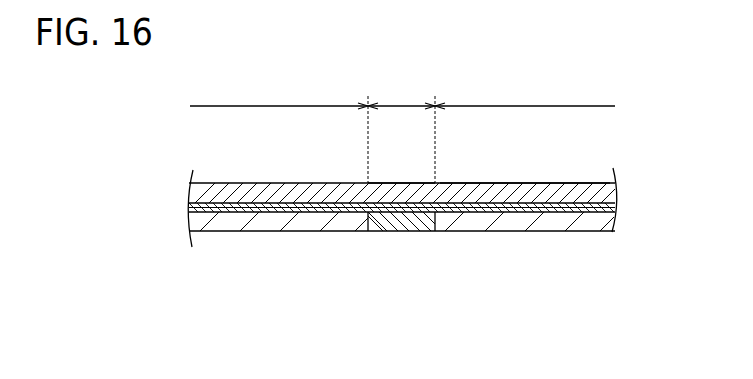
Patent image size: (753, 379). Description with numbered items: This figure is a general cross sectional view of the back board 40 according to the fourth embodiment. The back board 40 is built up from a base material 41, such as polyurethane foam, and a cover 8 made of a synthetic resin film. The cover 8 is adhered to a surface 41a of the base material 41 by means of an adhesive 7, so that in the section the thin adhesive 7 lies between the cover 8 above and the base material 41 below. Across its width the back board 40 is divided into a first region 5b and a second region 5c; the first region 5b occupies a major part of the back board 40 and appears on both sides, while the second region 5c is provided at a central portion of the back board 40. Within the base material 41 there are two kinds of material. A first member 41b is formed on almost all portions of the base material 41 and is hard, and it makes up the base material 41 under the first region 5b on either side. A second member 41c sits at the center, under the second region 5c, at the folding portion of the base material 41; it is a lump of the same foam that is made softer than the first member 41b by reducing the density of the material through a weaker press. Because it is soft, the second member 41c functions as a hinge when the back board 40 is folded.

The first region 5b is at (402, 95).
The second region 5c is at (401, 132).
The adhesive 7 is at (616, 207).
The cover 8 is at (608, 193).
The back board 40 is at (424, 162).
The base material 41 is at (270, 312).
The surface 41a is at (522, 193).
The first member 41b is at (302, 227).
The second member 41c is at (400, 227).